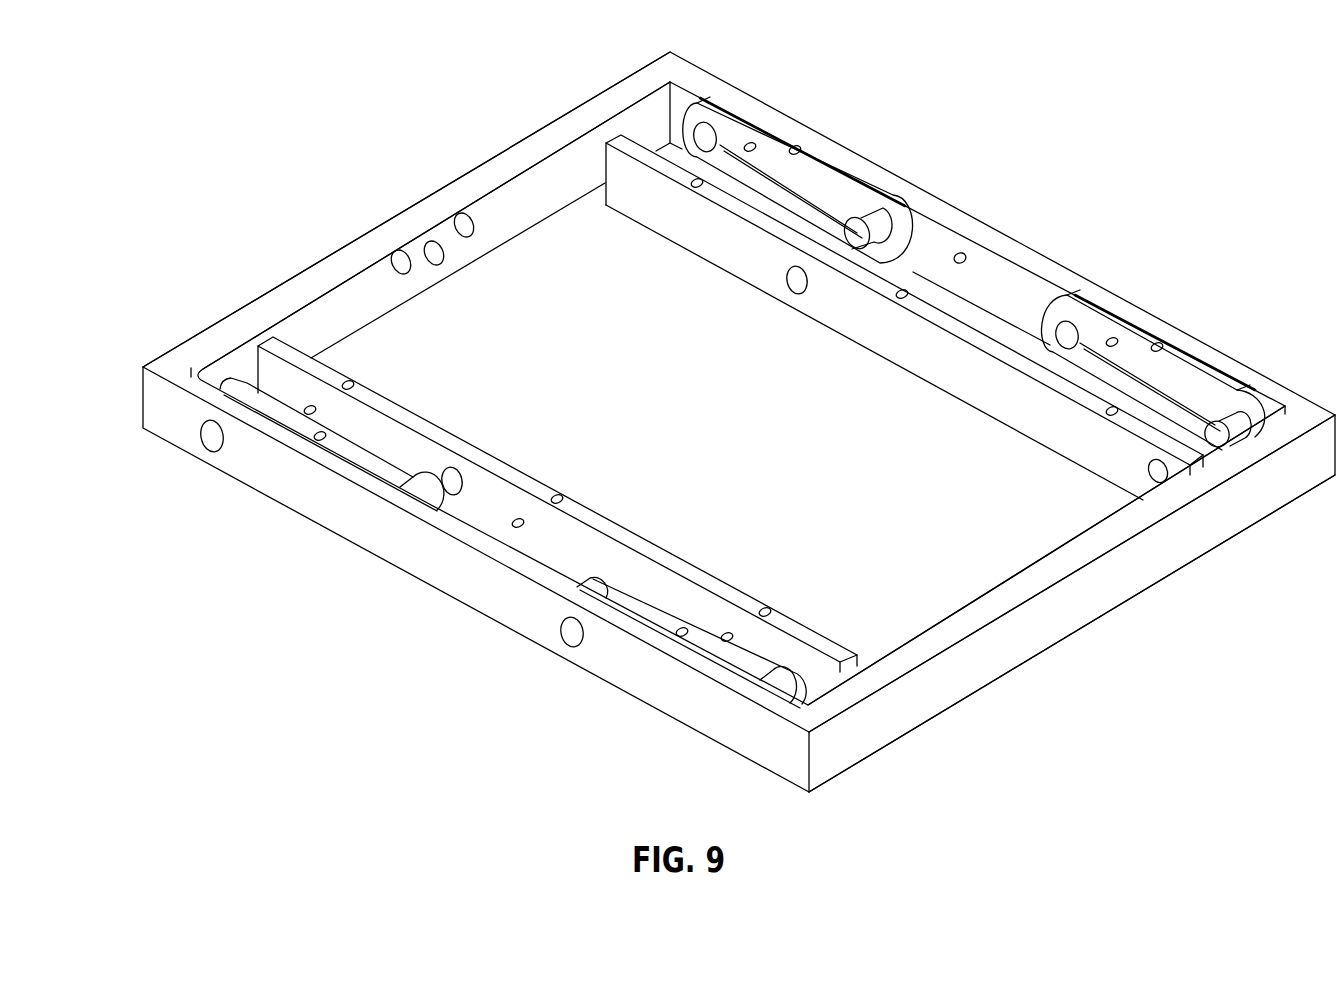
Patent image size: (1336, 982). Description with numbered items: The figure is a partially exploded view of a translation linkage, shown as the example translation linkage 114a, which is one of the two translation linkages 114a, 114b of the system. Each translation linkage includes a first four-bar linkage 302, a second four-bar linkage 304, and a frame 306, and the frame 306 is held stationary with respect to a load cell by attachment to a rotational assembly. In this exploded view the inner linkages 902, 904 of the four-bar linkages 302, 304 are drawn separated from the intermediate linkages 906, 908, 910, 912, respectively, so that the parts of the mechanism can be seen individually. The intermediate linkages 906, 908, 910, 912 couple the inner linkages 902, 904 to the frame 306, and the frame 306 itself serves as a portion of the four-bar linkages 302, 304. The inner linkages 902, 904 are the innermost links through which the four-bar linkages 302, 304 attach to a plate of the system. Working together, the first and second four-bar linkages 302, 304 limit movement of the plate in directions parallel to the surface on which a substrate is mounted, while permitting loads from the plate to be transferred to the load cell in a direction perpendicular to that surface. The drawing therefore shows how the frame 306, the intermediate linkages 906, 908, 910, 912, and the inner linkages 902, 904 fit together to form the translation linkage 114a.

The first translation linkage 114a is at (698, 420).
The second translation linkage 114b is at (250, 92).
The first four-bar linkage 302 is at (881, 384).
The second four-bar linkage 304 is at (541, 449).
The frame 306 is at (372, 243).
The inner linkage 902 is at (1035, 443).
The inner linkage 904 is at (457, 435).
The intermediate linkage 906 is at (833, 170).
The intermediate linkage 908 is at (1193, 367).
The intermediate linkage 910 is at (345, 450).
The intermediate linkage 912 is at (707, 648).